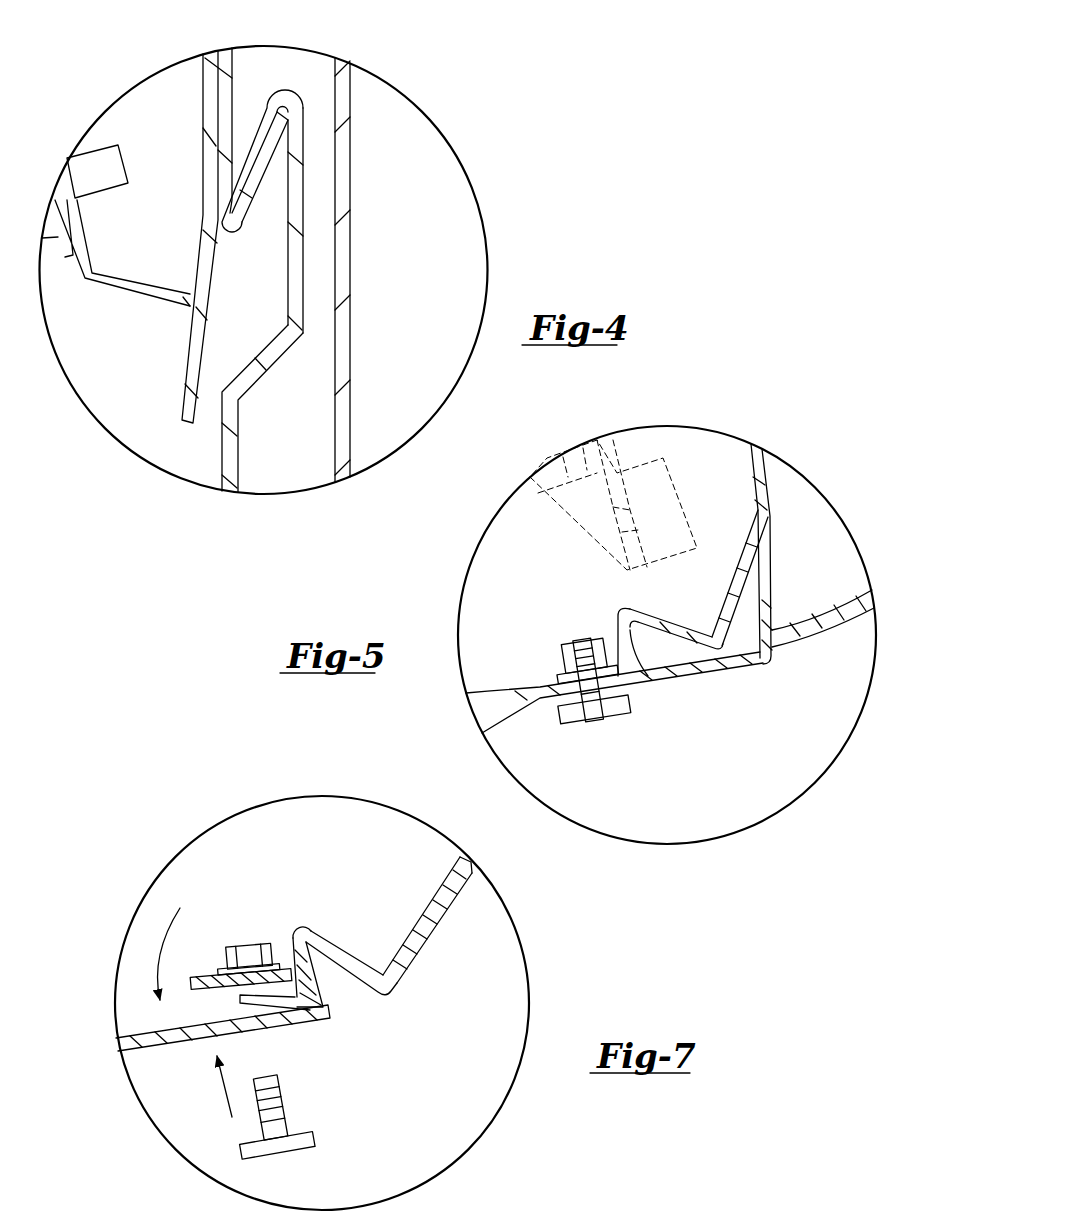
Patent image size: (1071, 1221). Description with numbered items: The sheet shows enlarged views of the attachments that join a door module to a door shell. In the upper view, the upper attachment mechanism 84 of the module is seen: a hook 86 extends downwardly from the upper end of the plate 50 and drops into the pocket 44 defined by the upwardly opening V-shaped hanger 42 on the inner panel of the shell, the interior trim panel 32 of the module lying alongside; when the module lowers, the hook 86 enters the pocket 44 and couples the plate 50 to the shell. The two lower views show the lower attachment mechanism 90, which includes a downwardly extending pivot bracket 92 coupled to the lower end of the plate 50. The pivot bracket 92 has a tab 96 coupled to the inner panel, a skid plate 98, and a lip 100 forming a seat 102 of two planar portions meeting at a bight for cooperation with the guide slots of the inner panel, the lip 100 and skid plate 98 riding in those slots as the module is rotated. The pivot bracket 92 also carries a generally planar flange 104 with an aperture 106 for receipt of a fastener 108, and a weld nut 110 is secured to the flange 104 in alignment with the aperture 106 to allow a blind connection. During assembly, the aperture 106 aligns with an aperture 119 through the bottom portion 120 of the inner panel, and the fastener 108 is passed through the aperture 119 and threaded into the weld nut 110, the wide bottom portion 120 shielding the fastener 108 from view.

In FIG. 4, the interior trim panel 32 is at (349, 177).
In FIG. 4, the hanger 42 is at (266, 168).
In FIG. 4, the pocket 44 is at (240, 176).
In FIG. 4, the plate 50 is at (227, 458).
In FIG. 4, the upper attachment mechanism 84 is at (436, 97).
In FIG. 4, the hook 86 is at (284, 90).
In FIG. 5, the lower attachment mechanism 90 is at (700, 421).
In FIG. 7, the lower attachment mechanism 90 is at (493, 1141).
In FIG. 5, the pivot bracket 92 is at (546, 676).
In FIG. 7, the pivot bracket 92 is at (208, 963).
In FIG. 5, the tab 96 is at (762, 448).
In FIG. 7, the tab 96 is at (477, 884).
In FIG. 5, the skid plate 98 is at (748, 629).
In FIG. 7, the skid plate 98 is at (429, 955).
In FIG. 5, the lip 100 is at (618, 608).
In FIG. 7, the lip 100 is at (297, 925).
In FIG. 5, the seat 102 is at (652, 680).
In FIG. 7, the seat 102 is at (325, 957).
In FIG. 5, the flange 104 is at (538, 688).
In FIG. 7, the flange 104 is at (194, 992).
In FIG. 7, the aperture 106 is at (310, 1010).
In FIG. 5, the fastener 108 is at (603, 712).
In FIG. 7, the fastener 108 is at (280, 1156).
In FIG. 5, the weld nut 110 is at (562, 643).
In FIG. 7, the weld nut 110 is at (228, 944).
In FIG. 7, the aperture 119 is at (245, 1022).
In FIG. 7, the bottom portion 120 is at (173, 1040).